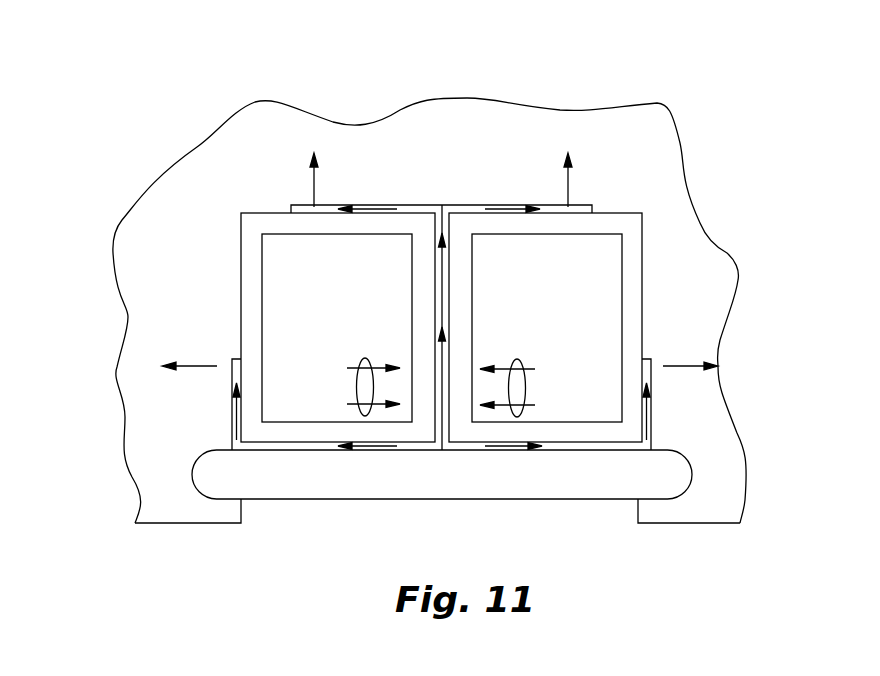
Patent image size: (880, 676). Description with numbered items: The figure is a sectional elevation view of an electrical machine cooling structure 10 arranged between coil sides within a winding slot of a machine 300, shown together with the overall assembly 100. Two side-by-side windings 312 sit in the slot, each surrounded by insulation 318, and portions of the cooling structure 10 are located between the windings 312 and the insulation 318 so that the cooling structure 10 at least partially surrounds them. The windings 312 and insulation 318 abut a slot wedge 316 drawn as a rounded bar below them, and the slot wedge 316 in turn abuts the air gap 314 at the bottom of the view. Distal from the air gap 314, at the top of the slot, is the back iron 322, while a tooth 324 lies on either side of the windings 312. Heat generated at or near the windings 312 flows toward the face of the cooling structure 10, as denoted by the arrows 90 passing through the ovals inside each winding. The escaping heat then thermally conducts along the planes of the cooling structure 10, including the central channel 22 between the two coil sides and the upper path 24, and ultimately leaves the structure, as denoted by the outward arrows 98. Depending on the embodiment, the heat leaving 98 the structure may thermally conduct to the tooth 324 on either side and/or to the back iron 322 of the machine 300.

The cooling system 100 is at (150, 138).
The machine 300 is at (170, 95).
The cooling structure 10 is at (383, 188).
The central air channel 22 is at (422, 306).
The air outlet 24 is at (585, 178).
The heat flow toward cooling structure 90 is at (362, 357).
The heat leaving the structure 98 is at (314, 181).
The windings 312 is at (333, 278).
The air gap 314 is at (473, 540).
The slot wedge 316 is at (553, 488).
The insulation 318 is at (245, 271).
The back iron 322 is at (468, 162).
The tooth 324 is at (183, 314).